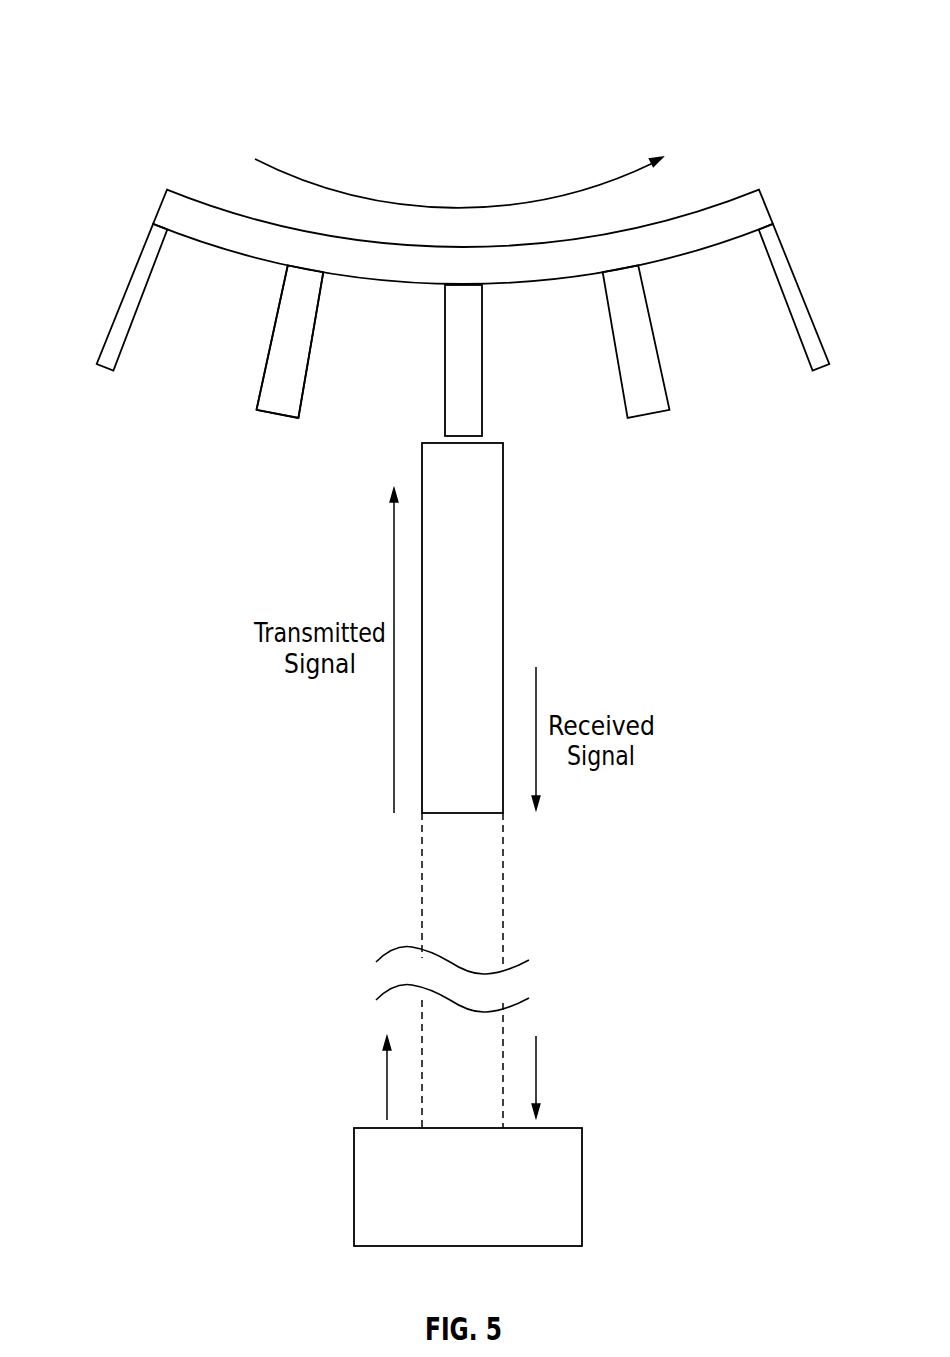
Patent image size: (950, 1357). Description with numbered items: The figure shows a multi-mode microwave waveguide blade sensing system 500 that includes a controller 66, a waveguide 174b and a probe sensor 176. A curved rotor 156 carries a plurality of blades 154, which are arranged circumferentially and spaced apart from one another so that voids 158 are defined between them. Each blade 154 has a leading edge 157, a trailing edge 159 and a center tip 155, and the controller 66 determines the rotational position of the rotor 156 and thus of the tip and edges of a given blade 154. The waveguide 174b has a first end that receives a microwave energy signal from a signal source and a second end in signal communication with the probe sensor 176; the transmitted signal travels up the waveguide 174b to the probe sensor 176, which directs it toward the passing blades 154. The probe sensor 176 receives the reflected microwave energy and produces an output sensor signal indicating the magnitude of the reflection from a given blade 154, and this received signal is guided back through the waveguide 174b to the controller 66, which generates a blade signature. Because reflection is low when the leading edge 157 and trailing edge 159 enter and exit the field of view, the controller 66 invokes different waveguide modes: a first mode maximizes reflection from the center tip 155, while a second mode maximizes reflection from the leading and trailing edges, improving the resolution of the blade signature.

The multi-mode microwave waveguide blade sensing system 500 is at (110, 32).
The rotor 156 is at (745, 190).
The blade 154 is at (268, 315).
The leading edge 157 is at (306, 353).
The trailing edge 159 is at (267, 361).
The center tip 155 is at (277, 418).
The void 158 is at (761, 406).
The probe sensor 176 is at (513, 577).
The waveguide 174b is at (421, 928).
The controller 66 is at (483, 1201).